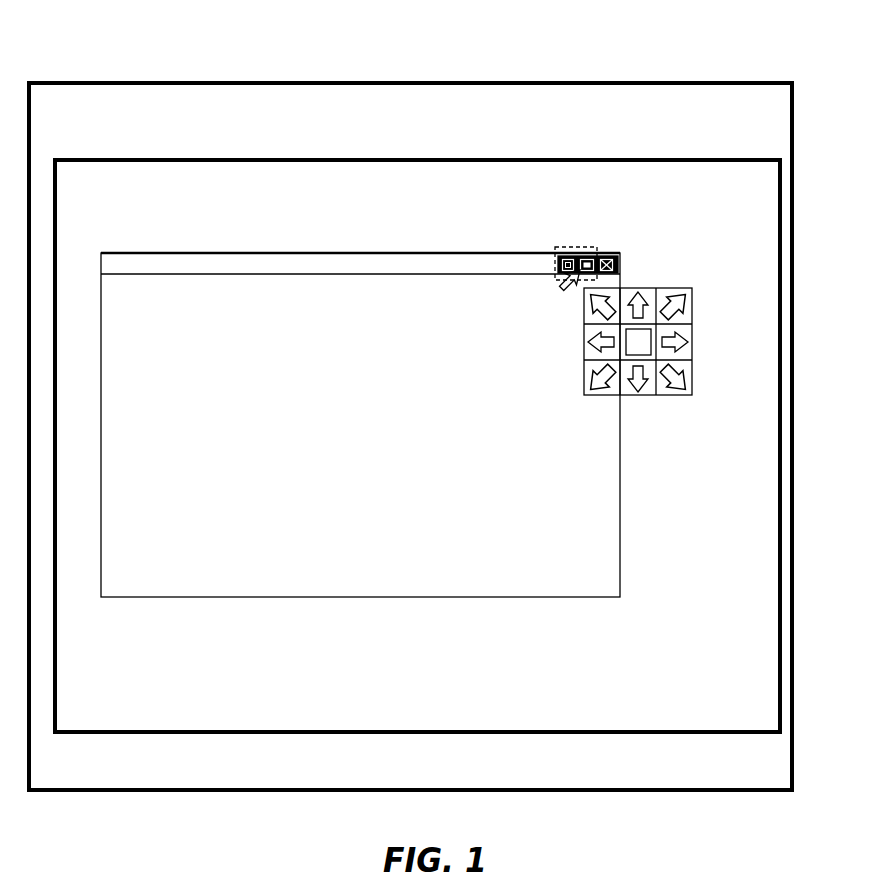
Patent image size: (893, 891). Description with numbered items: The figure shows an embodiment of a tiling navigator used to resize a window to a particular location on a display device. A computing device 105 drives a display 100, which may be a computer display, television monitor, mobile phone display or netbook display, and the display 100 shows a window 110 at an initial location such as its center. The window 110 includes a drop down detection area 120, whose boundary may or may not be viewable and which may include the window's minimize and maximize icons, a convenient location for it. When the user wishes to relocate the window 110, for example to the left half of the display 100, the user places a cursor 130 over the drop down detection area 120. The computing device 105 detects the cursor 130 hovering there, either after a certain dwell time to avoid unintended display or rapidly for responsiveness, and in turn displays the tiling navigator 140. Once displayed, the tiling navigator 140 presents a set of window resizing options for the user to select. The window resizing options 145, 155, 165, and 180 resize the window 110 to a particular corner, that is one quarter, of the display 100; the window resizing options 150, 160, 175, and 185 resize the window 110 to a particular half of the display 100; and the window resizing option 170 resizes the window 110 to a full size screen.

The computing device 105 is at (410, 399).
The display 100 is at (417, 416).
The window 110 is at (347, 446).
The drop down detection area 120 is at (503, 228).
The cursor 130 is at (513, 303).
The tiling navigator 140 is at (676, 303).
The window resizing option 145 is at (571, 311).
The window resizing option 150 is at (568, 348).
The window resizing option 155 is at (581, 392).
The window resizing option 160 is at (659, 395).
The window resizing option 165 is at (703, 385).
The window resizing option 170 is at (689, 359).
The window resizing option 175 is at (706, 347).
The window resizing option 180 is at (703, 311).
The window resizing option 185 is at (642, 290).